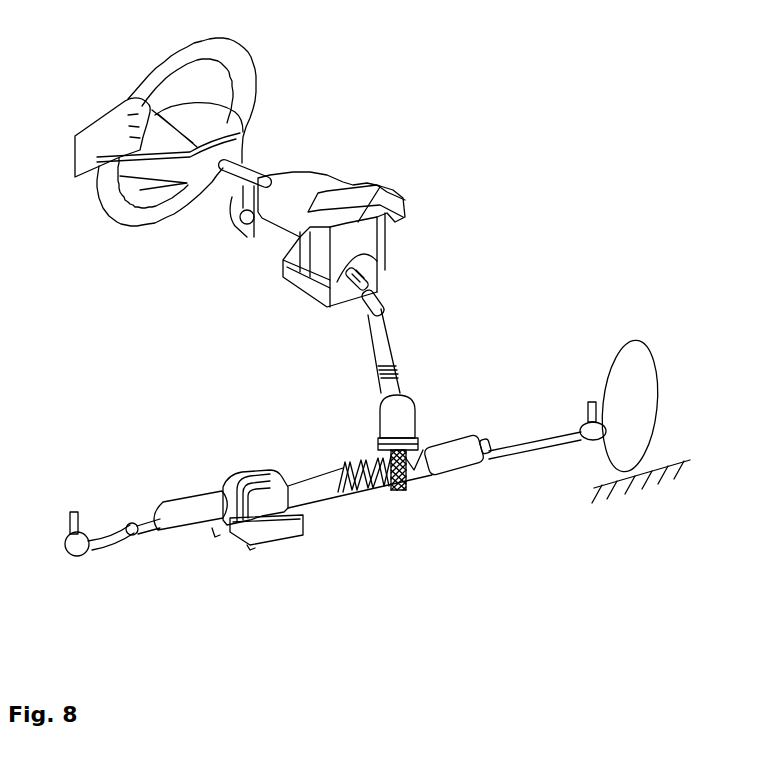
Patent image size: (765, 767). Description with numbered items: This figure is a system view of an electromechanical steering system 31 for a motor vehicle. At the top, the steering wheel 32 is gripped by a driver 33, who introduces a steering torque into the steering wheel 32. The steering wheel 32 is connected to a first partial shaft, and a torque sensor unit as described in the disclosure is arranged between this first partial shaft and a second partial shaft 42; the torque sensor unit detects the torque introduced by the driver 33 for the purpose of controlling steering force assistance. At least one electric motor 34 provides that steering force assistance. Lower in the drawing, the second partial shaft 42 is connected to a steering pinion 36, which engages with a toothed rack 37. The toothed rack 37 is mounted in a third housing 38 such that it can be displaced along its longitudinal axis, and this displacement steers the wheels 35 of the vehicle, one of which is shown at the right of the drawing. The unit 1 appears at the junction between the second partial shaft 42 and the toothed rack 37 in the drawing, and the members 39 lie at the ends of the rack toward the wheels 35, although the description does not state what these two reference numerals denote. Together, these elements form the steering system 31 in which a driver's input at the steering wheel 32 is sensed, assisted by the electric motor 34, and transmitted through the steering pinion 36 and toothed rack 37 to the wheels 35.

The steering actuator 1 is at (434, 415).
The electromechanical steering system 31 is at (460, 110).
The steering wheel 32 is at (249, 70).
The driver 33 is at (102, 137).
The electric motor 34 is at (278, 289).
The wheels 35 is at (632, 353).
The steering pinion 36 is at (398, 484).
The toothed rack 37 is at (367, 482).
The third housing 38 is at (461, 456).
The tie rod 39 is at (521, 454).
The second partial shaft 42 is at (401, 458).